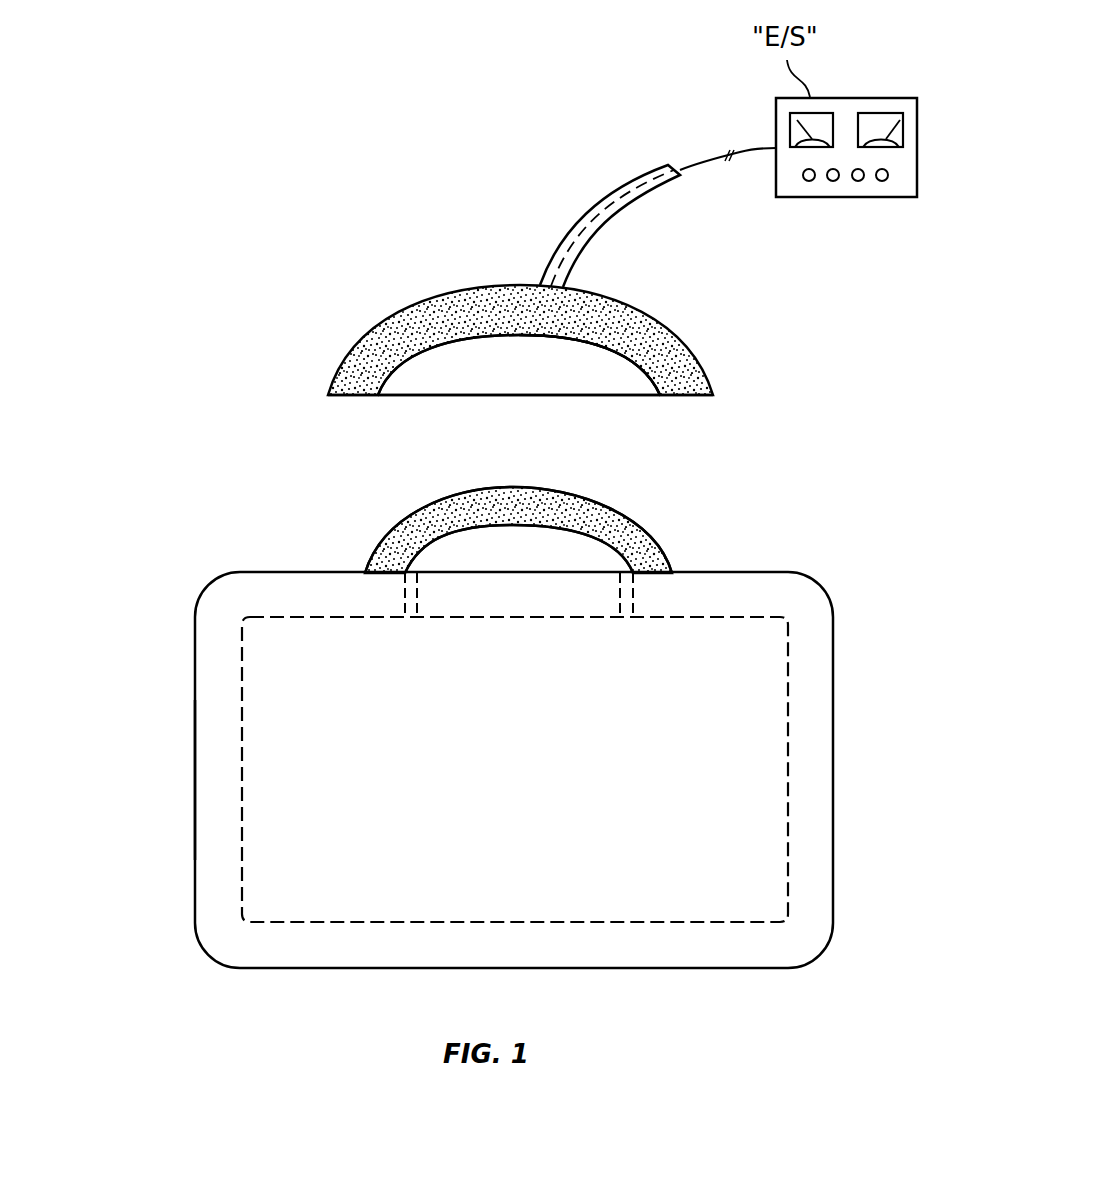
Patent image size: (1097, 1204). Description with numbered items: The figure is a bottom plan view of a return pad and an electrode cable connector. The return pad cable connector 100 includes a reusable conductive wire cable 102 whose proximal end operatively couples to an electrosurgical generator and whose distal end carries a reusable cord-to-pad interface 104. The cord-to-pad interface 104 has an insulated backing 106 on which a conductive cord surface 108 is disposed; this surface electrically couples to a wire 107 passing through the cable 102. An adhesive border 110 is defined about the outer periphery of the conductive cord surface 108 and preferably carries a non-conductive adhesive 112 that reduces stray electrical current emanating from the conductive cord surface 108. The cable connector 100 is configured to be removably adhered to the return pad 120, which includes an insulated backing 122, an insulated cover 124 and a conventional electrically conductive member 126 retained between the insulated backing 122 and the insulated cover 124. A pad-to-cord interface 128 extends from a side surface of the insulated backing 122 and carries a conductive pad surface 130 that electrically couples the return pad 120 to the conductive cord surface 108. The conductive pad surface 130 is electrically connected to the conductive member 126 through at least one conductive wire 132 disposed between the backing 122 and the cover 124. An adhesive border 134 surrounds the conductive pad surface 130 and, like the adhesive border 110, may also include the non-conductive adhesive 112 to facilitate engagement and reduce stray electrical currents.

The return pad cable connector 100 is at (420, 200).
The reusable conductive wire cable 102 is at (588, 214).
The cord-to-pad interface 104 is at (396, 291).
The insulated backing 106 is at (621, 294).
The wire 107 is at (690, 122).
The conductive cord surface 108 is at (592, 378).
The adhesive border 110 is at (658, 330).
The non-conductive adhesive 112 is at (680, 365).
The return pad 120 is at (146, 566).
The insulated backing 122 is at (194, 731).
The insulated cover 124 is at (220, 819).
The electrically conductive member 126 is at (345, 905).
The pad-to-cord interface 128 is at (667, 511).
The conductive pad surface 130 is at (452, 555).
The conductive wire 132 is at (413, 593).
The adhesive border 134 is at (590, 508).